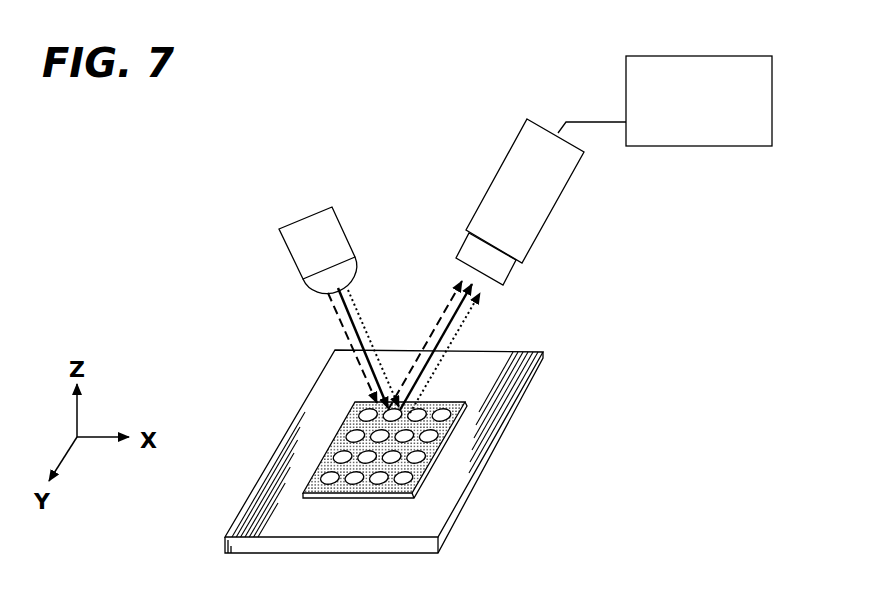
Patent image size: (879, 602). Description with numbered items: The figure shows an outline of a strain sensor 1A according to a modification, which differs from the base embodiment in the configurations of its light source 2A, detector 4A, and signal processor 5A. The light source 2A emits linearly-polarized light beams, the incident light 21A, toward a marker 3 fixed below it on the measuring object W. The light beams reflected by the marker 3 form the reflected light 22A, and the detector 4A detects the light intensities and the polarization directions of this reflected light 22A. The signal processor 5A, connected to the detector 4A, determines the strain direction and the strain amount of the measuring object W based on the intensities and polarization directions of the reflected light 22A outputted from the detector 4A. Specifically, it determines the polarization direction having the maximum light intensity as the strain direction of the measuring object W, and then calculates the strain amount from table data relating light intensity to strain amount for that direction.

The strain sensor 1A is at (384, 147).
The light source 2A is at (295, 255).
The incident light 21A is at (356, 305).
The reflected light 22A is at (446, 310).
The marker 3 is at (440, 452).
The detector 4A is at (537, 212).
The signal processor 5A is at (705, 69).
The measuring object W is at (445, 505).